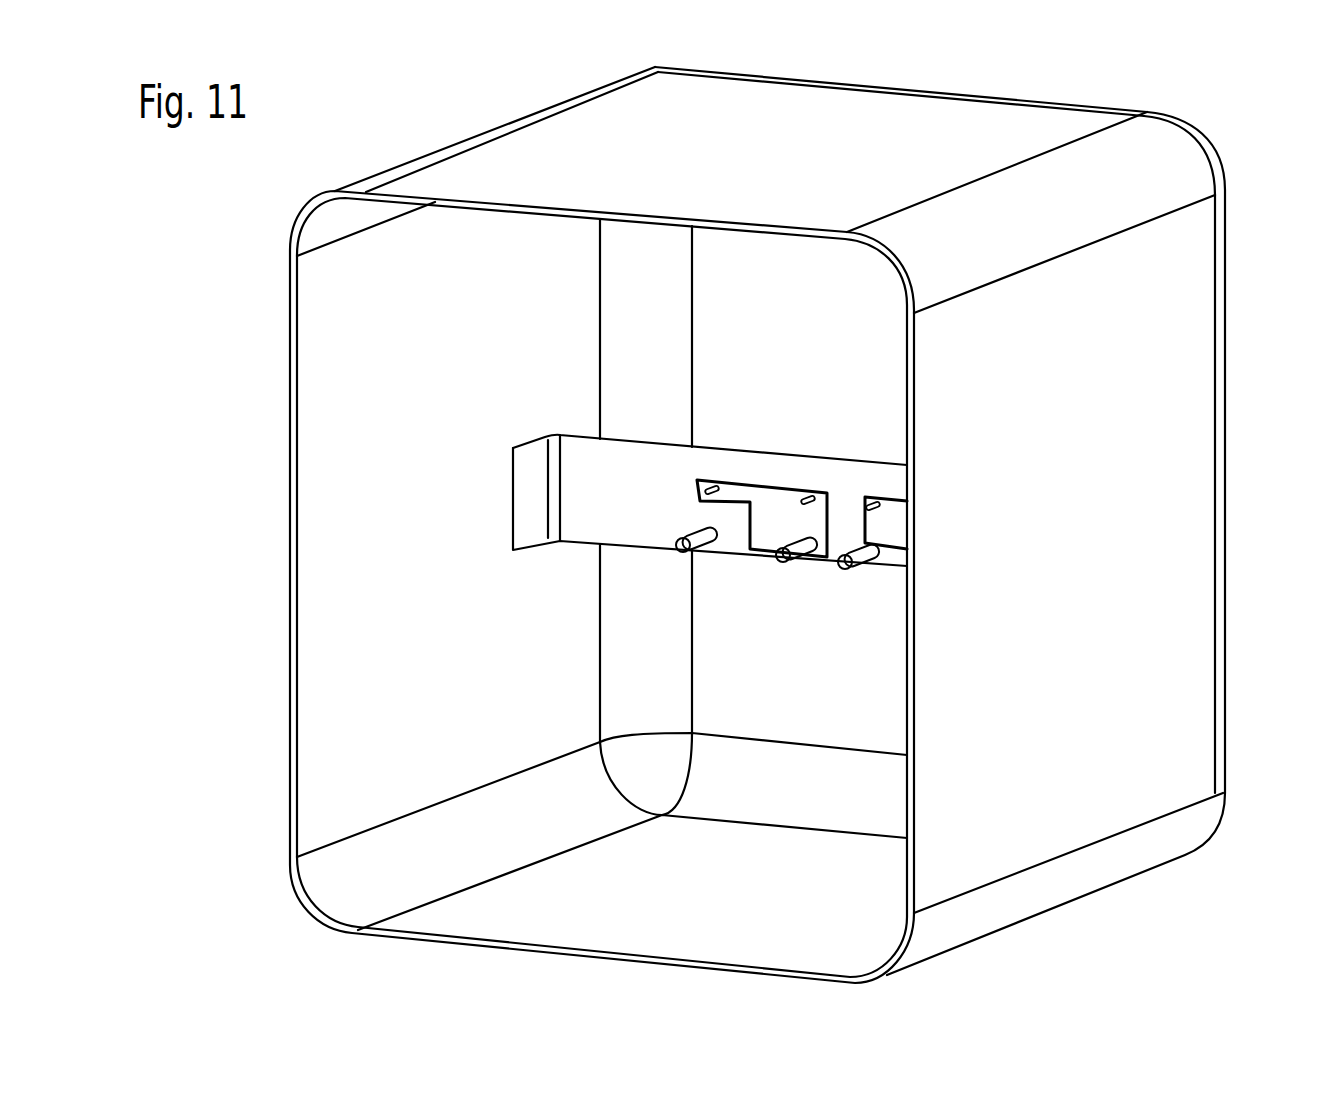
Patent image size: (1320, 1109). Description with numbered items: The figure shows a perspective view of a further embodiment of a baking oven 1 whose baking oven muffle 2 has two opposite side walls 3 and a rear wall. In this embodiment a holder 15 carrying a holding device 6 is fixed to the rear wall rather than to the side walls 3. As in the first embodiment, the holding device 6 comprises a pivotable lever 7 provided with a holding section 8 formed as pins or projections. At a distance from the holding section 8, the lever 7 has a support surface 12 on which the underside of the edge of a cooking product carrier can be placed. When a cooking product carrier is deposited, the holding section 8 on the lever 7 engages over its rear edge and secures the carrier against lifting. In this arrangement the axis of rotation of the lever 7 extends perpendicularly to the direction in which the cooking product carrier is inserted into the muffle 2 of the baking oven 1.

The baking oven 1 is at (229, 688).
The baking oven muffle 2 is at (349, 779).
The side wall 3 is at (315, 490).
The holding device 6 is at (624, 422).
The lever 7 is at (888, 530).
The holding section 8 is at (810, 498).
The support surface 12 is at (678, 548).
The holder 15 is at (583, 472).